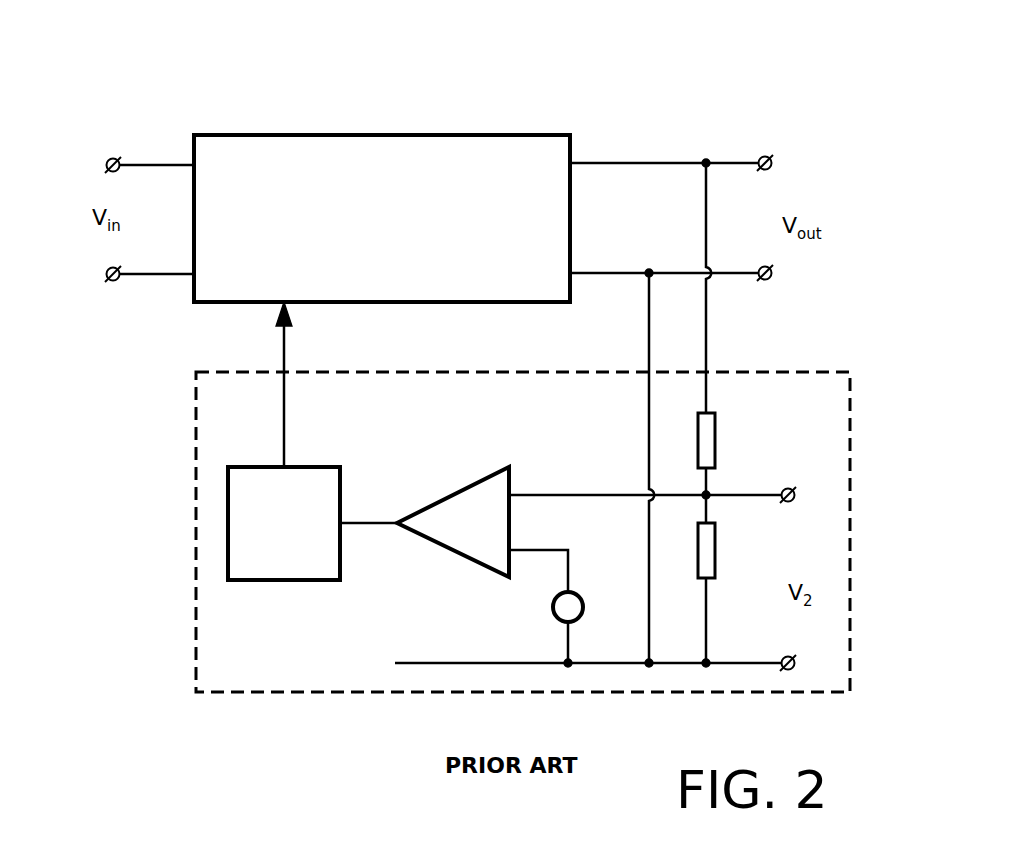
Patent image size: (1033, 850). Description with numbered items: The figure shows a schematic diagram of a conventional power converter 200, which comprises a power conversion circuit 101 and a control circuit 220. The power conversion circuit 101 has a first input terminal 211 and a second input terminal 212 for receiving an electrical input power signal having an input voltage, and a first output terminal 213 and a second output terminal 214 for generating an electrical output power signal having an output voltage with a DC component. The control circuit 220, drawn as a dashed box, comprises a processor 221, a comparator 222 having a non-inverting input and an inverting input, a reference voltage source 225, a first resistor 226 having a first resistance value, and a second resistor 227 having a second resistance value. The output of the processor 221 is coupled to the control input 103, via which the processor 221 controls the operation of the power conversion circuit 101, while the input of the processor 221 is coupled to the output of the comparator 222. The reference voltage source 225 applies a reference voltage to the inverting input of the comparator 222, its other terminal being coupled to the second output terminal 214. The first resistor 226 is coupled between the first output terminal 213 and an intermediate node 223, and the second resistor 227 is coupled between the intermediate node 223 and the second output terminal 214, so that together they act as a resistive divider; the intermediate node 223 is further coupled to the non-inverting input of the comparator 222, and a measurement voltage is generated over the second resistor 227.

The conventional power converter 200 is at (610, 90).
The power conversion circuit 101 is at (570, 213).
The control input 103 is at (285, 345).
The first input terminal 211 is at (157, 165).
The second input terminal 212 is at (157, 274).
The first output terminal 213 is at (665, 163).
The second output terminal 214 is at (614, 277).
The control circuit 220 is at (816, 370).
The processor 221 is at (284, 582).
The comparator 222 is at (452, 494).
The intermediate node 223 is at (710, 498).
The reference voltage source 225 is at (552, 606).
The first resistor 226 is at (698, 443).
The second resistor 227 is at (698, 548).